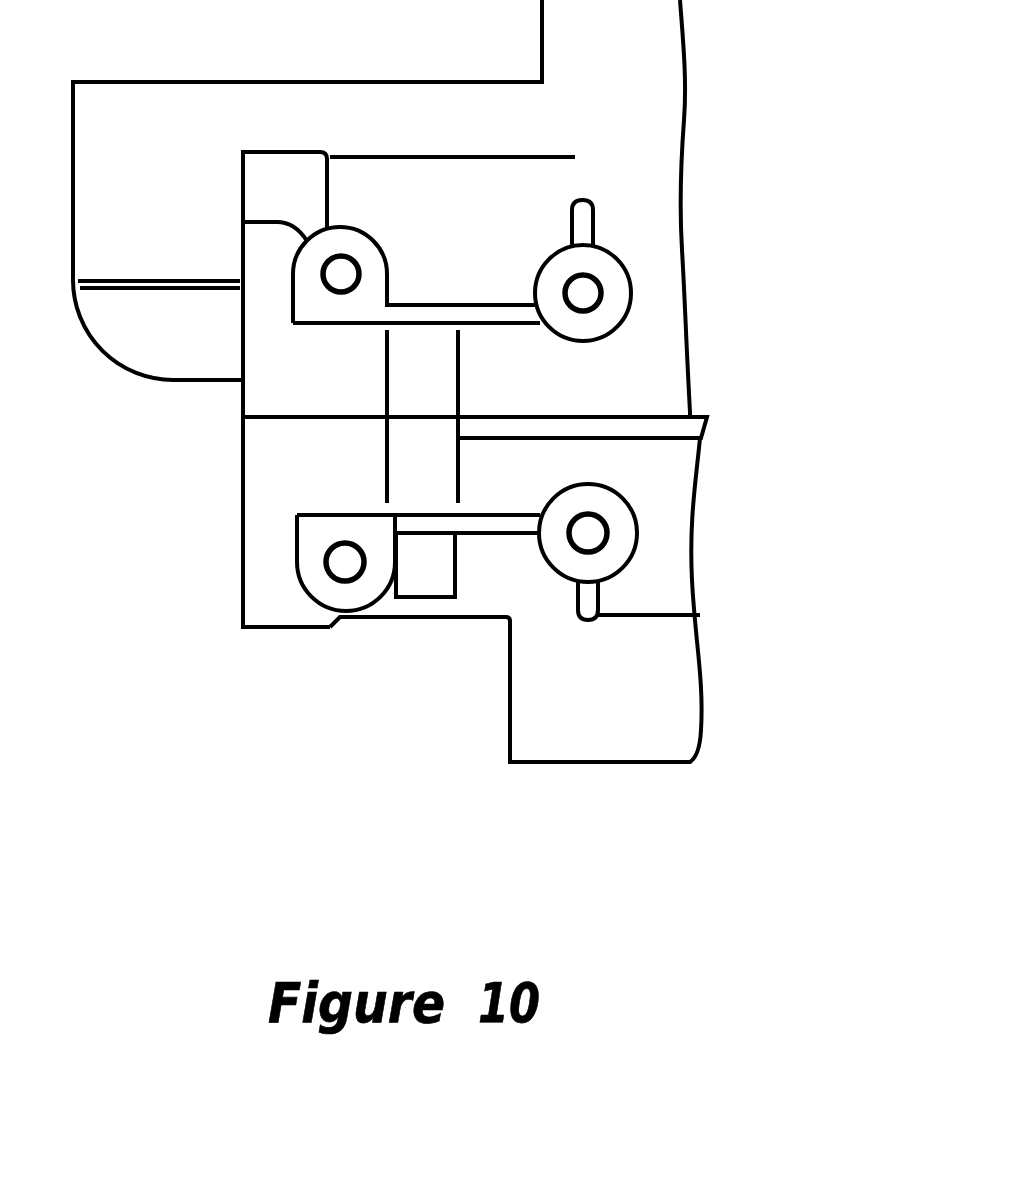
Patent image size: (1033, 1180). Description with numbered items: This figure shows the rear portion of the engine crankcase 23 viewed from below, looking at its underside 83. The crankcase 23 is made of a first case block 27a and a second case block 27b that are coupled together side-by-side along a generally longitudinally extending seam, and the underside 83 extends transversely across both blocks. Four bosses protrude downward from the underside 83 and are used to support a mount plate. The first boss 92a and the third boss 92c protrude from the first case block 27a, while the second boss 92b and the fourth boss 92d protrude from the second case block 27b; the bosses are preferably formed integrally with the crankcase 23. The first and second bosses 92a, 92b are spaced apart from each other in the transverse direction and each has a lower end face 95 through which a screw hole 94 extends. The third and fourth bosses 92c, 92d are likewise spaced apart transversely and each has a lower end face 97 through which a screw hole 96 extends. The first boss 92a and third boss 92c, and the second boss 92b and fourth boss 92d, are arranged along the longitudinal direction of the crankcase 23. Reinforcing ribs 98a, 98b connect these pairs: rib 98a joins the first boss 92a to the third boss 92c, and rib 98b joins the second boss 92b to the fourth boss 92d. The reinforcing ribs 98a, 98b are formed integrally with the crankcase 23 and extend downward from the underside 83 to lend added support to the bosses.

The crankcase 23 is at (97, 417).
The first case portion 27a is at (243, 558).
The second case portion 27b is at (240, 350).
The underside 83 is at (600, 385).
The first boss 92a is at (637, 543).
The second boss 92b is at (633, 285).
The third boss 92c is at (313, 602).
The fourth boss 92d is at (245, 222).
The screw hole 94 is at (577, 296).
The lower end face 95 is at (607, 272).
The screw hole 96 is at (349, 276).
The lower end face 97 is at (346, 252).
The reinforcing rib 98a is at (515, 523).
The reinforcing rib 98b is at (500, 313).